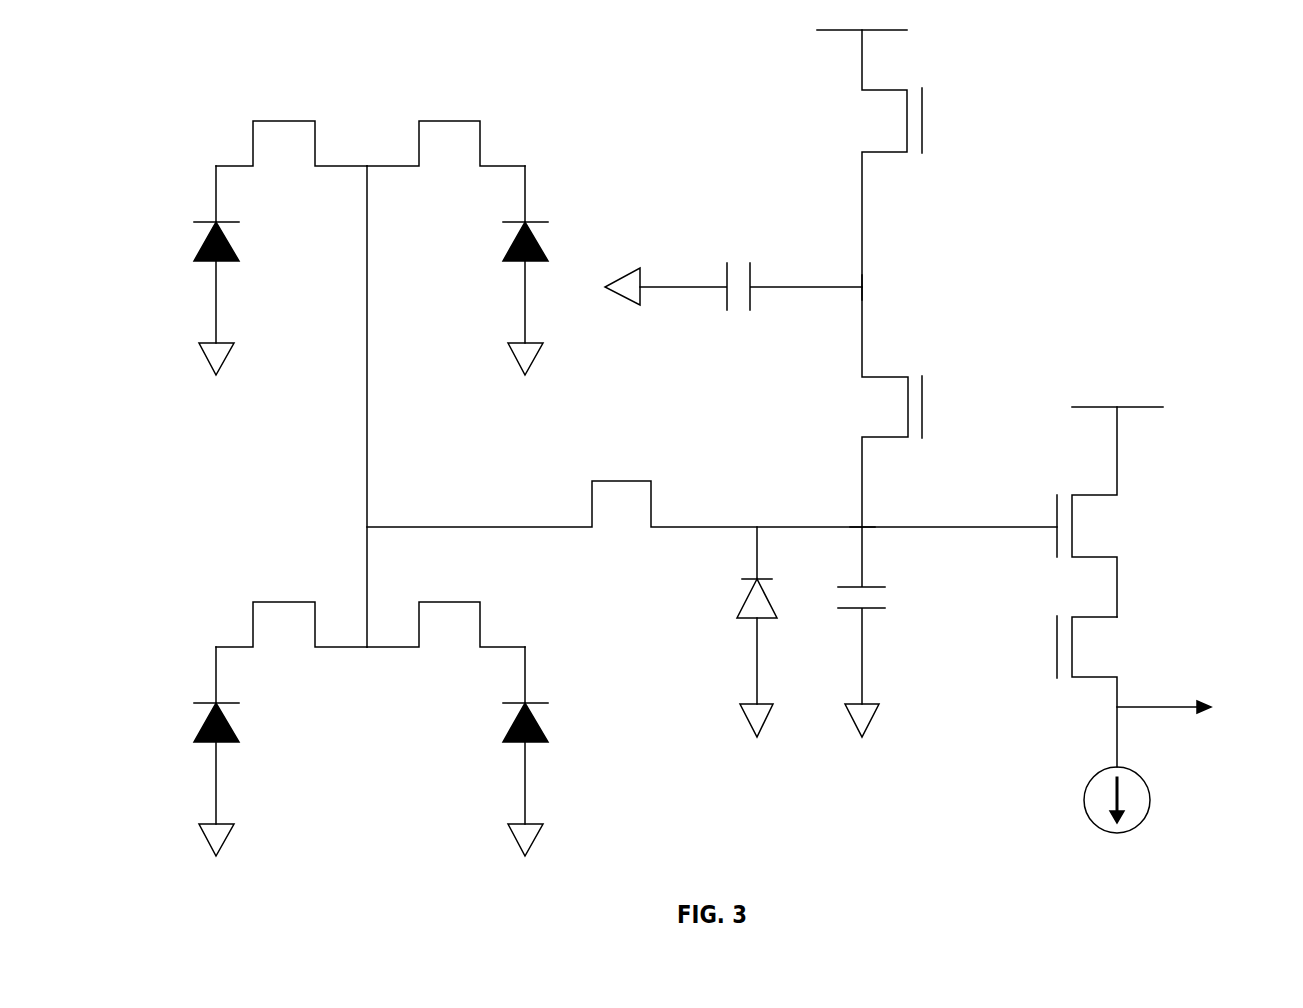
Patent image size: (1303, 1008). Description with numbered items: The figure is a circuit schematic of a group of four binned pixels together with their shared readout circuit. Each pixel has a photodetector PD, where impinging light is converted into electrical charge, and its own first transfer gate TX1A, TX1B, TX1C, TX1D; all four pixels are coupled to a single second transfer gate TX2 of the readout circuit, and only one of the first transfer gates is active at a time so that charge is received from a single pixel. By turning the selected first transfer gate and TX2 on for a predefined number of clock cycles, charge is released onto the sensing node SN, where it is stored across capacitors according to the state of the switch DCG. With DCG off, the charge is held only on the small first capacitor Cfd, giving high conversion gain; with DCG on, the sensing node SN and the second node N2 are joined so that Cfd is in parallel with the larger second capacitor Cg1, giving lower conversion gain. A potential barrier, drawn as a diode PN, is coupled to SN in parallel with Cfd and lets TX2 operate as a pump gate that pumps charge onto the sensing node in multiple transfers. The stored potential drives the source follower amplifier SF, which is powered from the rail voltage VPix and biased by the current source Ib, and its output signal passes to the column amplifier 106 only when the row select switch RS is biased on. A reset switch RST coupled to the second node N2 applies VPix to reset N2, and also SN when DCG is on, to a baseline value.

The column amplifier 106 is at (1197, 683).
The first transfer gate TX1A is at (253, 106).
The first transfer gate TX1B is at (419, 106).
The first transfer gate TX1C is at (253, 587).
The first transfer gate TX1D is at (419, 587).
The second transfer gate TX2 is at (592, 467).
The photodetector PD is at (371, 511).
The diode (potential barrier) PN is at (743, 632).
The first capacitor Cfd is at (868, 632).
The second capacitor Cg1 is at (733, 285).
The sensing node SN is at (862, 527).
The second node N2 is at (862, 287).
The reset switch RST is at (915, 158).
The switch (dual conversion gain switch) DCG is at (917, 407).
The source follower amplifier SF is at (1088, 512).
The row select switch RS is at (1070, 691).
The rail power (rail voltage) VPix is at (990, 204).
The current source Ib is at (1126, 800).